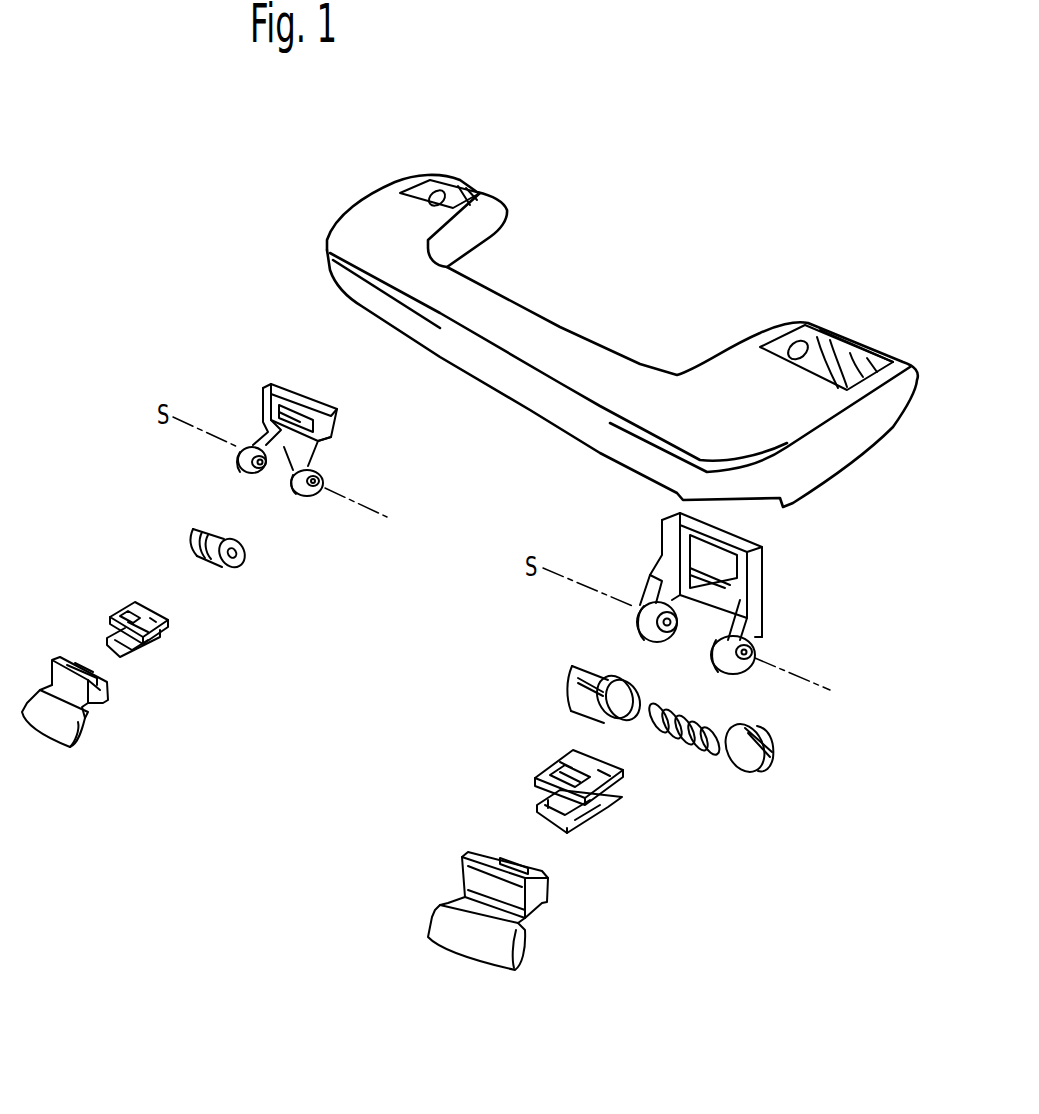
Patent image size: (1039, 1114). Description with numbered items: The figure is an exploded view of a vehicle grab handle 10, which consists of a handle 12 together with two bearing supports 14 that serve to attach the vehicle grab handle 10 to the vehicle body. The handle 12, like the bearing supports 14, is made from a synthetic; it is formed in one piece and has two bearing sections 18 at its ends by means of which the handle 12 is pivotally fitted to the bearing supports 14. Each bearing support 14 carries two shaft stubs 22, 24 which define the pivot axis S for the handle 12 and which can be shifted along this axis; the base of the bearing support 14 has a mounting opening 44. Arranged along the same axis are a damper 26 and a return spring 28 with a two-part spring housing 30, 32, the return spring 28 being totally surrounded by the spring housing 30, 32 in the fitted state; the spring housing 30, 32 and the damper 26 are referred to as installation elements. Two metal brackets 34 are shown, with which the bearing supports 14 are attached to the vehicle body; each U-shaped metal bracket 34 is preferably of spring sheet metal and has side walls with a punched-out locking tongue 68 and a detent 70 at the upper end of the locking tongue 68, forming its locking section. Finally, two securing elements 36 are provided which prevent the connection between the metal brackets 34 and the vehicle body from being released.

The vehicle grab handle 10 is at (622, 341).
The handle 12 is at (525, 293).
The bearing support 14 is at (499, 490).
The bearing section 18 is at (646, 232).
The shaft stub 22 is at (623, 624).
The shaft stub 24 is at (779, 647).
The damper 26 is at (256, 555).
The return spring 28 is at (713, 718).
The spring housing 30 is at (569, 696).
The spring housing 32 is at (781, 767).
The metal bracket 34 is at (405, 717).
The securing element 36 is at (319, 813).
The mounting opening 44 is at (763, 560).
The locking tongue 68 is at (567, 804).
The detent 70 is at (522, 822).